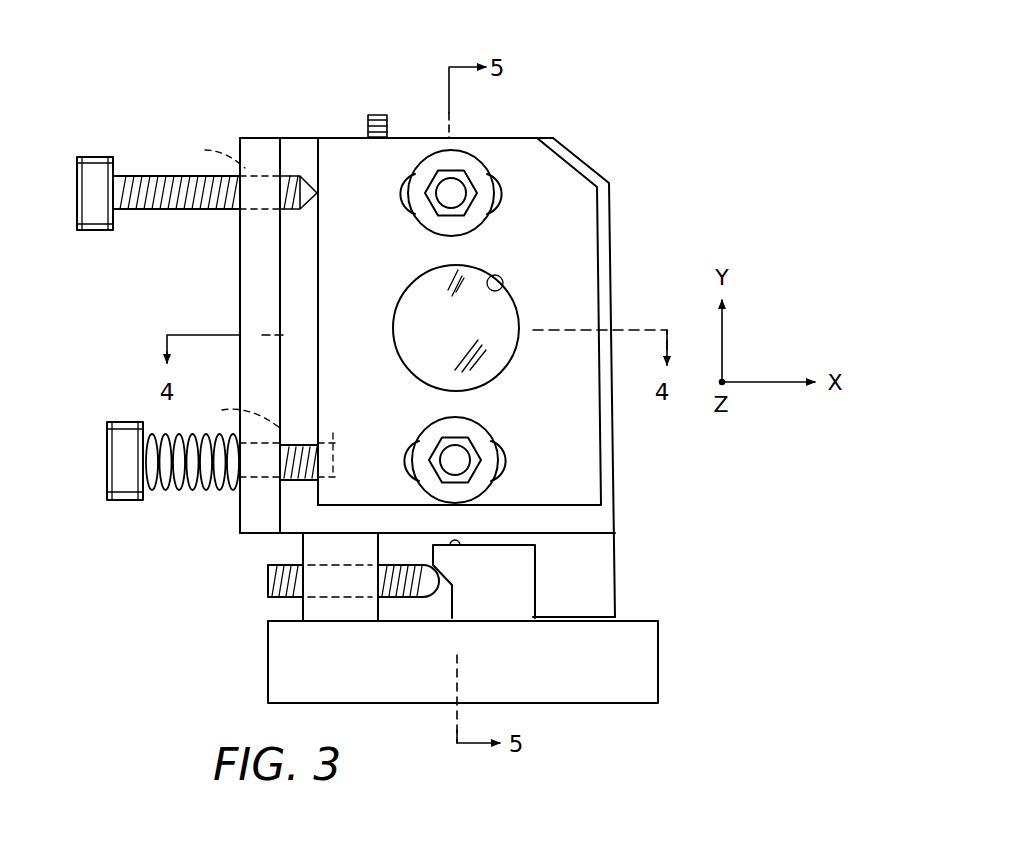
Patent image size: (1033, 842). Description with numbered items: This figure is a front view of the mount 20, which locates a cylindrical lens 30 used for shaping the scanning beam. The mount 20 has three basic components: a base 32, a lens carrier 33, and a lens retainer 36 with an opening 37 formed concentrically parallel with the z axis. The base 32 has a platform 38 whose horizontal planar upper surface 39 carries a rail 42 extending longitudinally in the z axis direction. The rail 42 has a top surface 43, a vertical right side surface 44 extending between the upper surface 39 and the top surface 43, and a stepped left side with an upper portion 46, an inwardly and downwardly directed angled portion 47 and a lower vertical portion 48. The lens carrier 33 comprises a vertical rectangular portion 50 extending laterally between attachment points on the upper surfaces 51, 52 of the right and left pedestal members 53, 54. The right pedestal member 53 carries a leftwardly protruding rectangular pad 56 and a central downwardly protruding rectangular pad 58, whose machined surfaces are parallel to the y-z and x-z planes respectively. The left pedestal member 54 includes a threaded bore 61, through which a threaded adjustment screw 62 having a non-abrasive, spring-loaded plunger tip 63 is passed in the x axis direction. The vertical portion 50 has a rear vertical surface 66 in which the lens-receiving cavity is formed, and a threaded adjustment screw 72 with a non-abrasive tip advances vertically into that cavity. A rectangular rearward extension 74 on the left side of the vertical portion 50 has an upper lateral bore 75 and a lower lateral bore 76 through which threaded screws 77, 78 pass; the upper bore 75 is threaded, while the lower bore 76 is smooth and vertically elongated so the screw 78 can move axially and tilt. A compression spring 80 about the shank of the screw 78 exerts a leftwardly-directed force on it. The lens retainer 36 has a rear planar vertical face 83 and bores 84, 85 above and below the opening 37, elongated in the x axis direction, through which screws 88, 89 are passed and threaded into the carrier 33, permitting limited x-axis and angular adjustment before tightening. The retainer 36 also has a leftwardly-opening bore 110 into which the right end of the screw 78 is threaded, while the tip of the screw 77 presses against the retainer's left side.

The mount 20 is at (683, 85).
The cylindrical lens 30 is at (412, 343).
The base 32 is at (667, 662).
The lens carrier 33 is at (395, 301).
The lens retainer 36 is at (565, 202).
The opening 37 is at (500, 287).
The platform 38 is at (280, 657).
The upper surface 39 is at (270, 621).
The rail 42 is at (474, 605).
The top surface 43 is at (457, 548).
The vertical right side surface 44 is at (536, 588).
The upper portion 46 is at (433, 555).
The angled portion 47 is at (452, 597).
The lower vertical portion 48 is at (448, 612).
The vertical rectangular portion 50 is at (500, 348).
The upper surface 51 is at (600, 528).
The upper surface 52 is at (327, 530).
The right pedestal member 53 is at (617, 558).
The left pedestal member 54 is at (303, 551).
The rectangular pad 56 is at (533, 605).
The rectangular pad 58 is at (617, 615).
The threaded bore 61 is at (340, 562).
The threaded adjustment screw 62 is at (268, 580).
The plunger tip 63 is at (420, 620).
The rear vertical surface 66 is at (302, 148).
The threaded adjustment screw 72 is at (388, 122).
The rectangular rearward extension 74 is at (252, 290).
The upper lateral bore 75 is at (208, 151).
The lower lateral bore 76 is at (236, 412).
The threaded screw 77 is at (137, 172).
The threaded screw 78 is at (107, 440).
The compression spring 80 is at (180, 490).
The rear planar vertical face 83 is at (580, 430).
The bore 84 is at (398, 203).
The bore 85 is at (402, 447).
The screw 88 is at (470, 207).
The screw 89 is at (472, 452).
The bore 110 is at (333, 433).